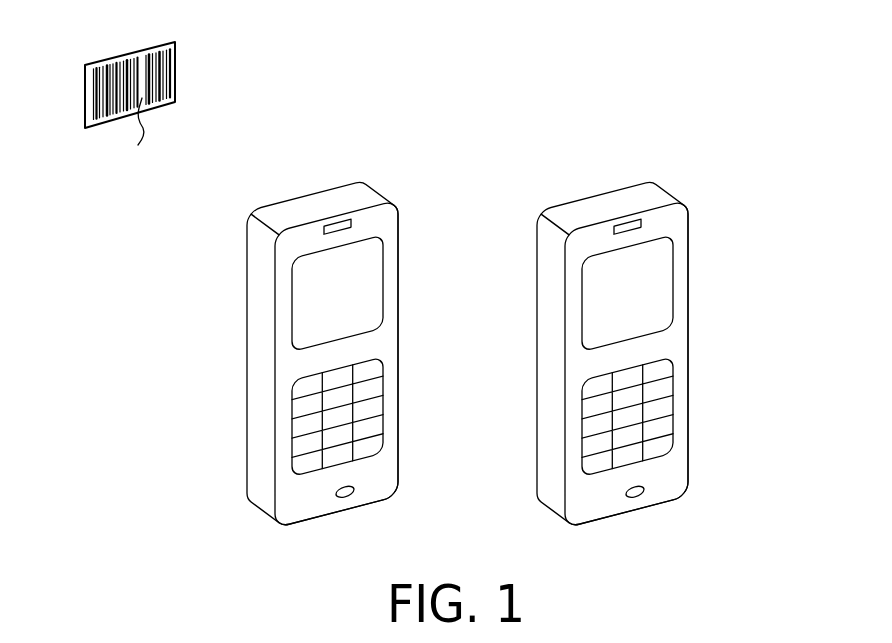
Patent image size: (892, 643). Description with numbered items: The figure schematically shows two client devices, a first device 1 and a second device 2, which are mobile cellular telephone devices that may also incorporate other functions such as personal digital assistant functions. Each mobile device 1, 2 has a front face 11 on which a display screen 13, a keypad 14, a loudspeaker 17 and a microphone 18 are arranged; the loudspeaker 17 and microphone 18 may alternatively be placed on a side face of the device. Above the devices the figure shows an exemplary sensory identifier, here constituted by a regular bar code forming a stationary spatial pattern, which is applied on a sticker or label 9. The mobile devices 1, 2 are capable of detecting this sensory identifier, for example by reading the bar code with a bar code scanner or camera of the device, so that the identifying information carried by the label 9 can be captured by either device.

The first device 1 is at (350, 362).
The second device 2 is at (552, 515).
The sticker or label 9 is at (175, 68).
The front face 11 is at (390, 482).
The display screen 13 is at (363, 317).
The keypad 14 is at (365, 423).
The loudspeaker 17 is at (352, 221).
The microphone 18 is at (347, 499).